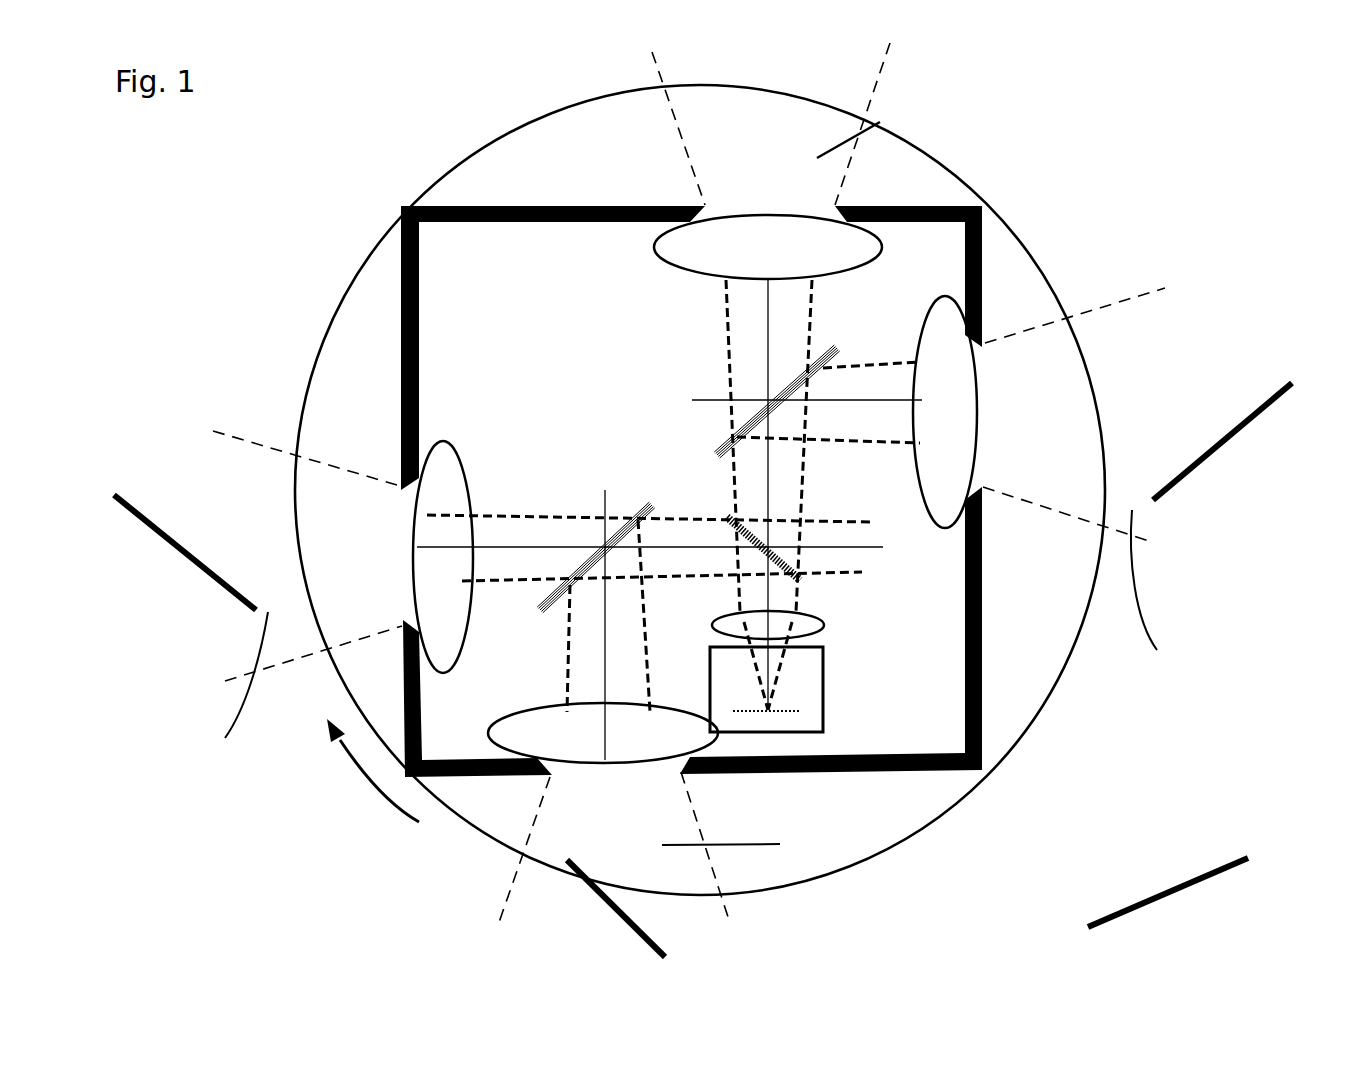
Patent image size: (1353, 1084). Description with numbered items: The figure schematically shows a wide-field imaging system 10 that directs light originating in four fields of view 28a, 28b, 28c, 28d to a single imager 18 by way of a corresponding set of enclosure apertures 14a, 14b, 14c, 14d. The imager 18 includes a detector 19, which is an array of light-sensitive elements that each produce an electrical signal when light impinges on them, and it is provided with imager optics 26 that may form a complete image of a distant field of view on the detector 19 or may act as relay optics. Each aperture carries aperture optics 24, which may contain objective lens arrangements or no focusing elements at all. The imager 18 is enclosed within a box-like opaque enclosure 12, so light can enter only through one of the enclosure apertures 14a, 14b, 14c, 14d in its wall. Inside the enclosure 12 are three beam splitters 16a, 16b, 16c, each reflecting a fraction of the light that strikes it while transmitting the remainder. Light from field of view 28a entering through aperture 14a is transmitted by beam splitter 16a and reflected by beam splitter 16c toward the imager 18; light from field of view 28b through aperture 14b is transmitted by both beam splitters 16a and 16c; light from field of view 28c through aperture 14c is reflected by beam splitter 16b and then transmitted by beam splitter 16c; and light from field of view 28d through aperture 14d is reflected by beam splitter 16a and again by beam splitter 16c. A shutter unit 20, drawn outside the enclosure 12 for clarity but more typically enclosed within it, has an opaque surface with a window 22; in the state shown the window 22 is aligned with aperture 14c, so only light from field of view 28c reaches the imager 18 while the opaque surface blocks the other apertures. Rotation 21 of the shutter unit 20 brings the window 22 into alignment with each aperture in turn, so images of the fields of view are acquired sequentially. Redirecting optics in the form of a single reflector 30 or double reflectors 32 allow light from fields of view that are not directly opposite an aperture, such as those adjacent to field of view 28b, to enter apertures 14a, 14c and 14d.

The wide-field imaging system 10 is at (222, 336).
The opaque enclosure 12 is at (470, 207).
The enclosure aperture 14a is at (398, 563).
The enclosure aperture 14b is at (768, 207).
The enclosure aperture 14c is at (987, 430).
The enclosure aperture 14d is at (622, 777).
The beam splitter 16a is at (633, 528).
The beam splitter 16b is at (742, 430).
The beam splitter 16c is at (778, 550).
The imager 18 is at (818, 688).
The detector 19 is at (787, 712).
The shutter unit 20 is at (377, 240).
The rotation 21 is at (381, 802).
The window 22 is at (1092, 397).
The aperture optics 24 is at (678, 267).
The imager optics 26 is at (815, 615).
The field of view 28a is at (225, 738).
The field of view 28b is at (880, 122).
The field of view 28c is at (1157, 650).
The field of view 28d is at (780, 844).
The single reflector 30 is at (211, 580).
The double reflectors 32 is at (640, 920).